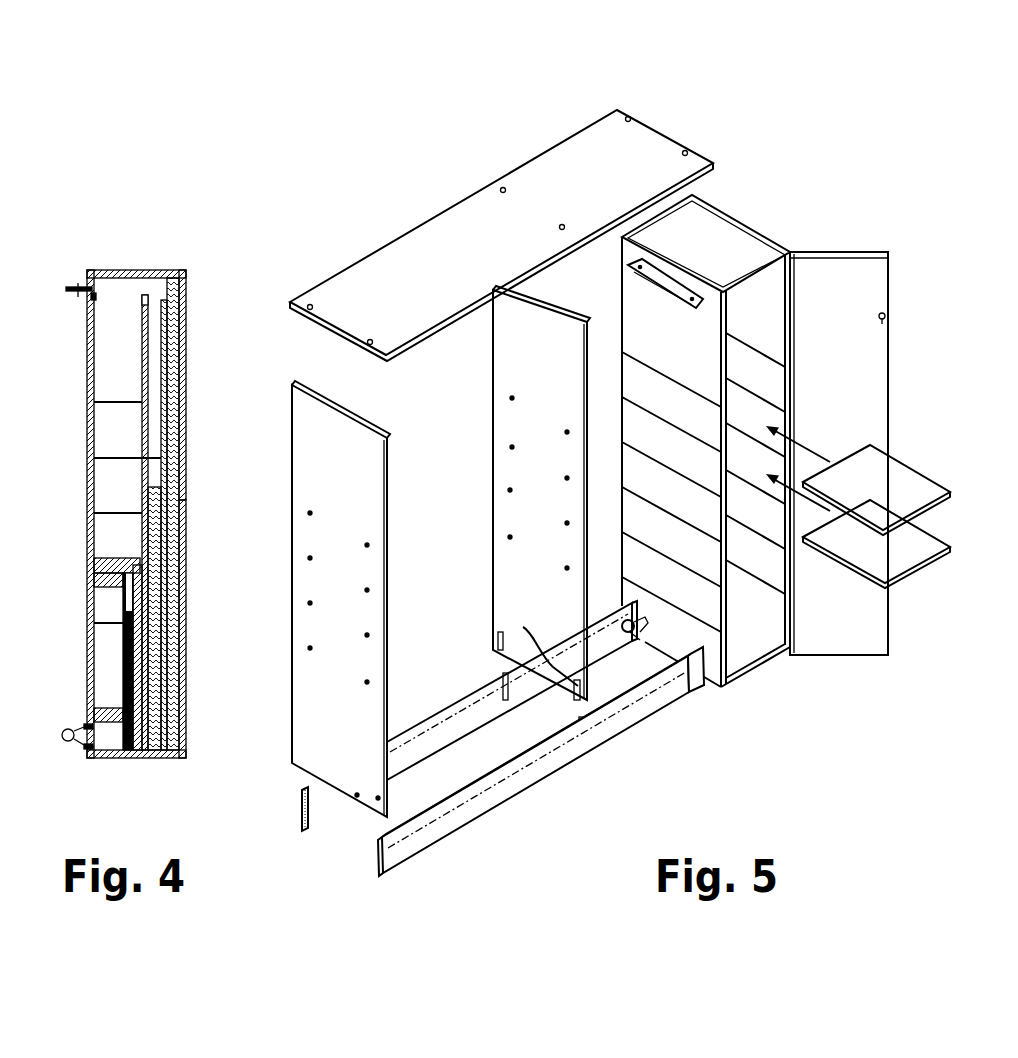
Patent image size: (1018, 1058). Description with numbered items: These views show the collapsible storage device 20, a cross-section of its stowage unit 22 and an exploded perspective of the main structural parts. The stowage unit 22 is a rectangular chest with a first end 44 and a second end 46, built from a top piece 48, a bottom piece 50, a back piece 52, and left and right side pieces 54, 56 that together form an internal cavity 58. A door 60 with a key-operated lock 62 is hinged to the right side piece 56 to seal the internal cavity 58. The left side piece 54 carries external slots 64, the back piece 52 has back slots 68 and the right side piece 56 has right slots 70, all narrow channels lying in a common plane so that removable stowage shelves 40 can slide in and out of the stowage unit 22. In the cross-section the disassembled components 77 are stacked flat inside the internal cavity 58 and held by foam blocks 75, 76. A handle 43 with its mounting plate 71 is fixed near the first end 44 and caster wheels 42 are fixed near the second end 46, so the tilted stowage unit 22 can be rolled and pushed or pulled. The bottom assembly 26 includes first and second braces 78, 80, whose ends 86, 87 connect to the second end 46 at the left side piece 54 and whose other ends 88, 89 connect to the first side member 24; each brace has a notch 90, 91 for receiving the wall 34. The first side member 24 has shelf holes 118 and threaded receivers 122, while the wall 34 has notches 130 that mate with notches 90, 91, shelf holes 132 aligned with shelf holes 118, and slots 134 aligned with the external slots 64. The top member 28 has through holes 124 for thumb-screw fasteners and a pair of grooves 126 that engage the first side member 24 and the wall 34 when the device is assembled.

In FIG. 4, the collapsible storage device 20 is at (138, 218).
In FIG. 5, the collapsible storage device 20 is at (404, 168).
In FIG. 5, the stowage unit 22 is at (862, 222).
In FIG. 5, the first side member 24 is at (310, 453).
In FIG. 5, the bottom assembly 26 is at (525, 803).
In FIG. 5, the top member 28 is at (567, 172).
In FIG. 5, the wall 34 is at (523, 592).
In FIG. 5, the stowage shelves 40 is at (920, 482).
In FIG. 4, the wheels 42 is at (64, 742).
In FIG. 5, the wheels 42 is at (638, 638).
In FIG. 4, the handle 43 is at (63, 300).
In FIG. 5, the handle 43 is at (668, 278).
In FIG. 4, the first end 44 is at (190, 284).
In FIG. 5, the first end 44 is at (710, 200).
In FIG. 4, the second end 46 is at (186, 740).
In FIG. 5, the second end 46 is at (747, 673).
In FIG. 4, the top piece 48 is at (117, 272).
In FIG. 5, the top piece 48 is at (747, 243).
In FIG. 4, the bottom piece 50 is at (115, 758).
In FIG. 5, the bottom piece 50 is at (750, 655).
In FIG. 4, the back piece 52 is at (127, 354).
In FIG. 4, the left side piece 54 is at (88, 438).
In FIG. 5, the left side piece 54 is at (705, 610).
In FIG. 4, the right side piece 56 is at (187, 332).
In FIG. 5, the right side piece 56 is at (780, 240).
In FIG. 4, the internal cavity 58 is at (104, 665).
In FIG. 5, the internal cavity 58 is at (763, 310).
In FIG. 5, the door 60 is at (873, 627).
In FIG. 5, the lock 62 is at (880, 313).
In FIG. 4, the external slots 64 is at (90, 470).
In FIG. 5, the external slots 64 is at (643, 355).
In FIG. 4, the back slots 68 is at (118, 402).
In FIG. 5, the right slots 70 is at (787, 390).
In FIG. 4, the mounting plate 71 is at (78, 286).
In FIG. 4, the foam block 75 is at (108, 578).
In FIG. 4, the foam block 76 is at (107, 713).
In FIG. 4, the disassembled components 77 is at (160, 622).
In FIG. 5, the first brace 78 is at (440, 827).
In FIG. 5, the second brace 80 is at (437, 733).
In FIG. 5, the end of first brace 86 is at (693, 673).
In FIG. 5, the end of second brace 87 is at (610, 620).
In FIG. 5, the other end of first brace 88 is at (380, 852).
In FIG. 5, the other end of second brace 89 is at (303, 813).
In FIG. 5, the notch 90 is at (585, 725).
In FIG. 5, the notch 91 is at (500, 696).
In FIG. 5, the shelf holes 118 is at (308, 602).
In FIG. 5, the threaded receiver 122 is at (380, 428).
In FIG. 5, the through holes 124 is at (370, 338).
In FIG. 5, the grooves 126 is at (605, 256).
In FIG. 5, the notches 130 is at (523, 627).
In FIG. 5, the shelf holes 132 is at (510, 400).
In FIG. 5, the slots 134 is at (569, 432).